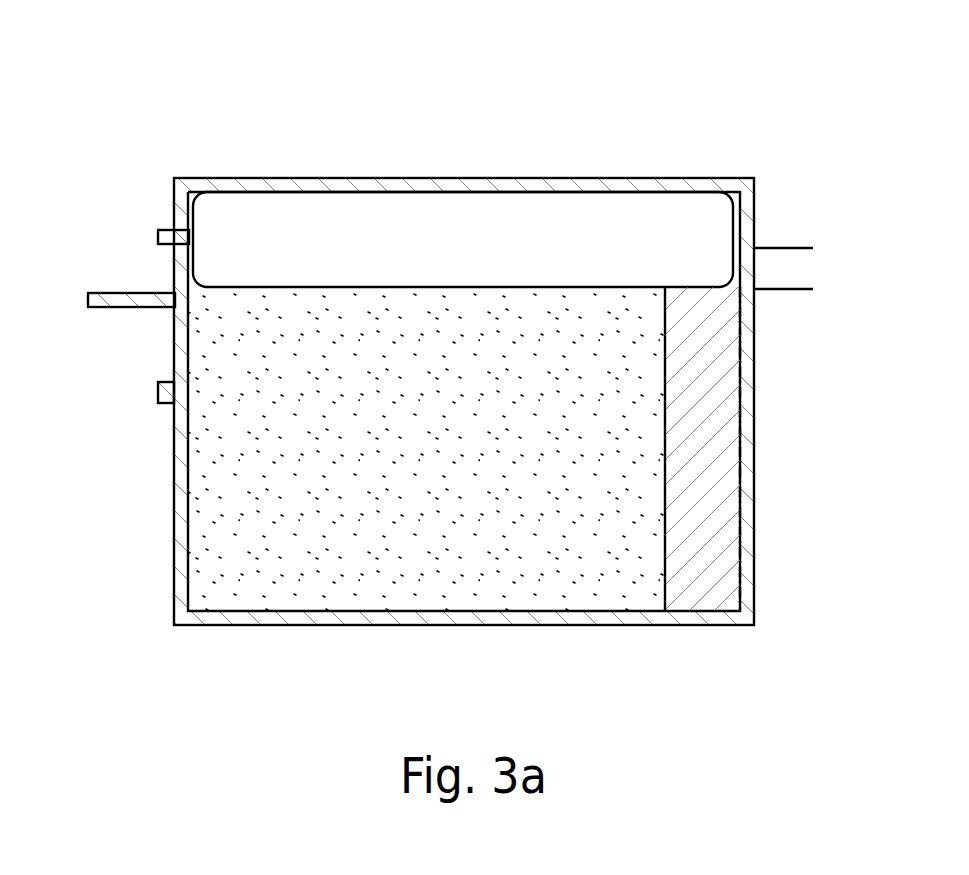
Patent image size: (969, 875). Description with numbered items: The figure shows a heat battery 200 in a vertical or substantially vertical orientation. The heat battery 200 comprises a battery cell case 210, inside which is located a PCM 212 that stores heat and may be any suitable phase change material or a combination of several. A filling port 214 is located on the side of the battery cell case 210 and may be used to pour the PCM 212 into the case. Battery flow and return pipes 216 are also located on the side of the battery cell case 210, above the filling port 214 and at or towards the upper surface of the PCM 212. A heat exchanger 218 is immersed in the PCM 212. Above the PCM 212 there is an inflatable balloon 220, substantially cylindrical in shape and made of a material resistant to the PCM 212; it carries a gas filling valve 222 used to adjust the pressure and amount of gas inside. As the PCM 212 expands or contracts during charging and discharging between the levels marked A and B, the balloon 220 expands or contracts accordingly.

The heat battery 200 is at (472, 104).
The battery cell case 210 is at (748, 587).
The PCM 212 is at (640, 473).
The filling port 214 is at (158, 392).
The battery flow and return pipes 216 is at (120, 292).
The heat exchanger 218 is at (714, 352).
The inflatable balloon 220 is at (467, 244).
The gas filling valve 222 is at (168, 229).